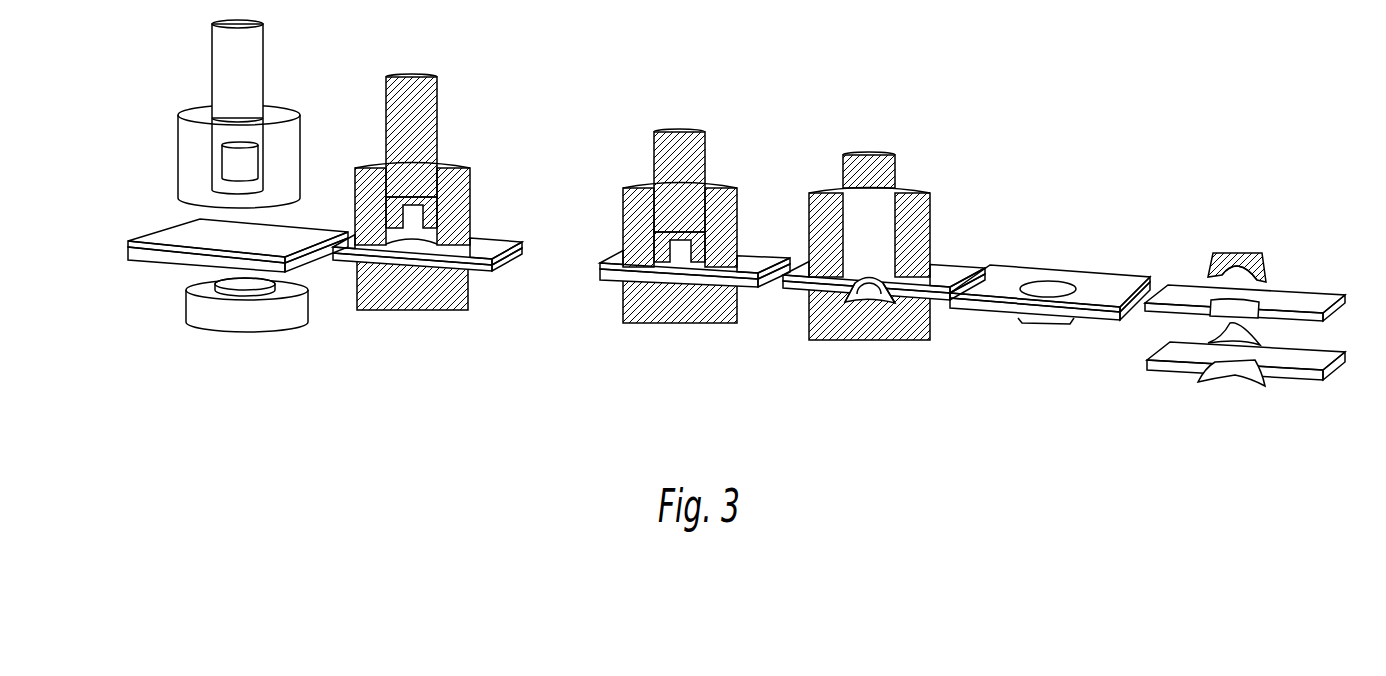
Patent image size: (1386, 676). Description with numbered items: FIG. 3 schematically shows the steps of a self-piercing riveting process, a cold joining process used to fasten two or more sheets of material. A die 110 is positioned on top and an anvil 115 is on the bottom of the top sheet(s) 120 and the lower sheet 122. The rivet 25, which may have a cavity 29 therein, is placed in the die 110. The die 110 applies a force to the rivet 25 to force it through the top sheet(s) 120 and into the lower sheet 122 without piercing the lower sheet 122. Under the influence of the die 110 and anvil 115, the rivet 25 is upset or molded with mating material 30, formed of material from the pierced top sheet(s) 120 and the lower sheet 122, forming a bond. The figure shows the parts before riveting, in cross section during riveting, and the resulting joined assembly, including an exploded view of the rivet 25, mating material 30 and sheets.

The rivet 25 is at (744, 230).
The cavity 29 is at (841, 241).
The mating material 30 is at (1038, 328).
The die 110 is at (562, 148).
The anvil 115 is at (565, 332).
The top sheet(s) 120 is at (736, 263).
The lower sheet 122 is at (736, 335).